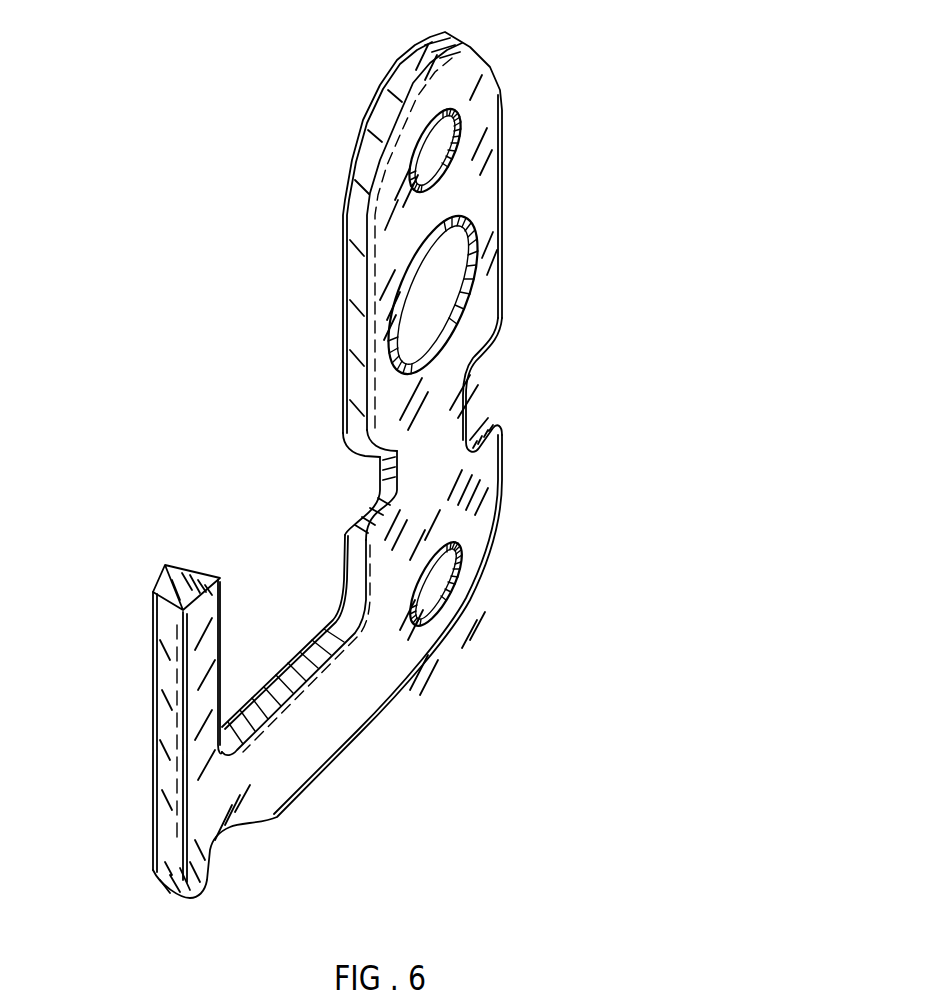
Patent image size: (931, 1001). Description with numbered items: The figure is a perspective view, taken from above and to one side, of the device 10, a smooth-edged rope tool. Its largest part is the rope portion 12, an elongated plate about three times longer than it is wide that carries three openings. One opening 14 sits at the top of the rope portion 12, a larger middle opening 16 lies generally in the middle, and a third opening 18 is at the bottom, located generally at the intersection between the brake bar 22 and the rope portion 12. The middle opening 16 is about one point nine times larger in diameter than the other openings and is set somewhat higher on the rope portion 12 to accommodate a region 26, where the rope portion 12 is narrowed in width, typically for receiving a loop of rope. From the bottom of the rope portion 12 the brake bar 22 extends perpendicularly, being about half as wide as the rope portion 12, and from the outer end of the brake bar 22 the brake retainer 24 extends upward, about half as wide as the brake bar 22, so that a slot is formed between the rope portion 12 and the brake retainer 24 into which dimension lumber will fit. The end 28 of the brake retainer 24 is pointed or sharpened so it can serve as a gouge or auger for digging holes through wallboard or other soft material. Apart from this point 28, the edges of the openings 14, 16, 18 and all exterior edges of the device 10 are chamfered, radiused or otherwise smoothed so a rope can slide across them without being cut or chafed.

The device 10 is at (299, 410).
The rope portion 12 is at (346, 233).
The opening 14 is at (433, 162).
The middle opening 16 is at (450, 314).
The opening 18 is at (452, 578).
The brake bar 22 is at (299, 645).
The brake retainer 24 is at (153, 656).
The region 26 is at (470, 391).
The end 28 is at (189, 567).